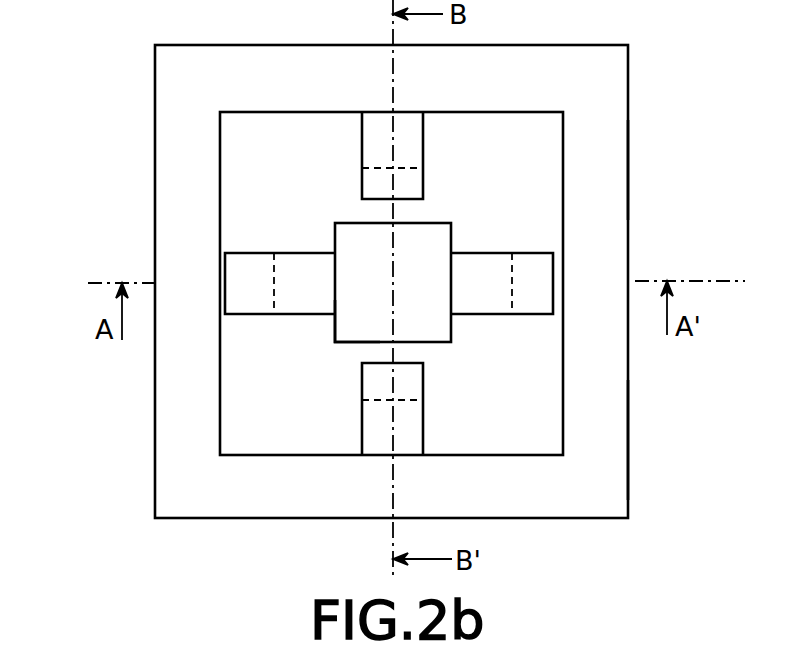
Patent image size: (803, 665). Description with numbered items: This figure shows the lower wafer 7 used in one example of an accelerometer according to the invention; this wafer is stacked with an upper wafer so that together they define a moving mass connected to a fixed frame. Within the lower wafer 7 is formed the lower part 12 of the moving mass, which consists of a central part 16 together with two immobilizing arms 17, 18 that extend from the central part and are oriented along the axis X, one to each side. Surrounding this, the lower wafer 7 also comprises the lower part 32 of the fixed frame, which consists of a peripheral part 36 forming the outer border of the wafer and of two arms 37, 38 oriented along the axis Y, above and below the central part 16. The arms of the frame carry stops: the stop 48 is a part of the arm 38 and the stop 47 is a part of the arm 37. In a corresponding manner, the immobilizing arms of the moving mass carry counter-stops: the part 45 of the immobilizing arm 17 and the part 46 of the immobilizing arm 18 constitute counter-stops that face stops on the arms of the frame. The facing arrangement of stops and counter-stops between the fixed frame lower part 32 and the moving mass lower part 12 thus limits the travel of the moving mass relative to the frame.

The lower wafer 7 is at (600, 83).
The lower part of the fixed frame 32 is at (628, 163).
The peripheral part 36 is at (600, 445).
The lower part of the moving mass 12 is at (336, 345).
The central part 16 is at (430, 245).
The immobilizing arm 17 is at (297, 268).
The immobilizing arm 18 is at (488, 275).
The arm 37 is at (408, 428).
The arm 38 is at (407, 147).
The counter-stop part of immobilizing arm 45 is at (250, 298).
The counter-stop part of immobilizing arm 46 is at (530, 297).
The stop 47 is at (375, 385).
The stop 48 is at (380, 189).